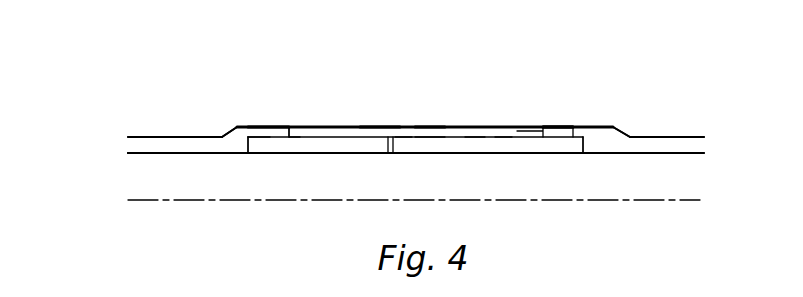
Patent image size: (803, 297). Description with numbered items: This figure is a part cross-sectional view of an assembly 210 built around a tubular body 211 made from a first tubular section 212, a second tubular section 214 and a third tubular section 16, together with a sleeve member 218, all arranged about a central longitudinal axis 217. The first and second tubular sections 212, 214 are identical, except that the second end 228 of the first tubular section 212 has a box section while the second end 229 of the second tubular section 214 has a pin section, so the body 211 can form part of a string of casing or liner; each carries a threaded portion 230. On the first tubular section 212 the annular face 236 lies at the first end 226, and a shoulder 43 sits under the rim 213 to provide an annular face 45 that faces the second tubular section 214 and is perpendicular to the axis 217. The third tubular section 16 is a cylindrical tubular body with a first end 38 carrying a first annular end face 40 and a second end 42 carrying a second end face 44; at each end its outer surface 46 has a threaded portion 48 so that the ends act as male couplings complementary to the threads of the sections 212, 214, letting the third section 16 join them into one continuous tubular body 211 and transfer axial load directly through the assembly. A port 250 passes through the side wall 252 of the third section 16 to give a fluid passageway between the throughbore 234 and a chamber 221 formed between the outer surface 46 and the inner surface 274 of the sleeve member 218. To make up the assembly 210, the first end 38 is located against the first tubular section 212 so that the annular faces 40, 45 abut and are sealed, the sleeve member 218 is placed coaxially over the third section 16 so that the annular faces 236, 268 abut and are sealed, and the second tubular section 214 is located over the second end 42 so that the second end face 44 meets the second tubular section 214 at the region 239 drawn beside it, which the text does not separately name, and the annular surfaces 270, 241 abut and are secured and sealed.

The assembly 210 is at (658, 92).
The tubular body 211 is at (139, 175).
The first tubular section 212 is at (237, 127).
The rim 213 is at (220, 136).
The second tubular section 214 is at (613, 127).
The central longitudinal axis 217 is at (195, 201).
The sleeve member 218 is at (428, 133).
The chamber 221 is at (403, 137).
The first end 226 is at (282, 127).
The second end 228 is at (153, 136).
The second end 229 is at (691, 136).
The portion 230 is at (255, 127).
The throughbore 234 is at (193, 191).
The annular face 236 is at (285, 127).
The distal end wall 239 is at (583, 139).
The annular surface 241 is at (550, 126).
The port 250 is at (387, 153).
The side wall 252 is at (503, 142).
The annular face 268 is at (291, 134).
The annular surface 270 is at (518, 131).
The inner surface 274 is at (378, 127).
The third tubular section 16 is at (441, 147).
The first end 38 is at (301, 140).
The first annular end face 40 is at (252, 139).
The second end 42 is at (527, 146).
The shoulder 43 is at (257, 140).
The second end face 44 is at (582, 141).
The annular face 45 is at (249, 137).
The outer surface 46 is at (475, 137).
The portion 48 is at (569, 131).